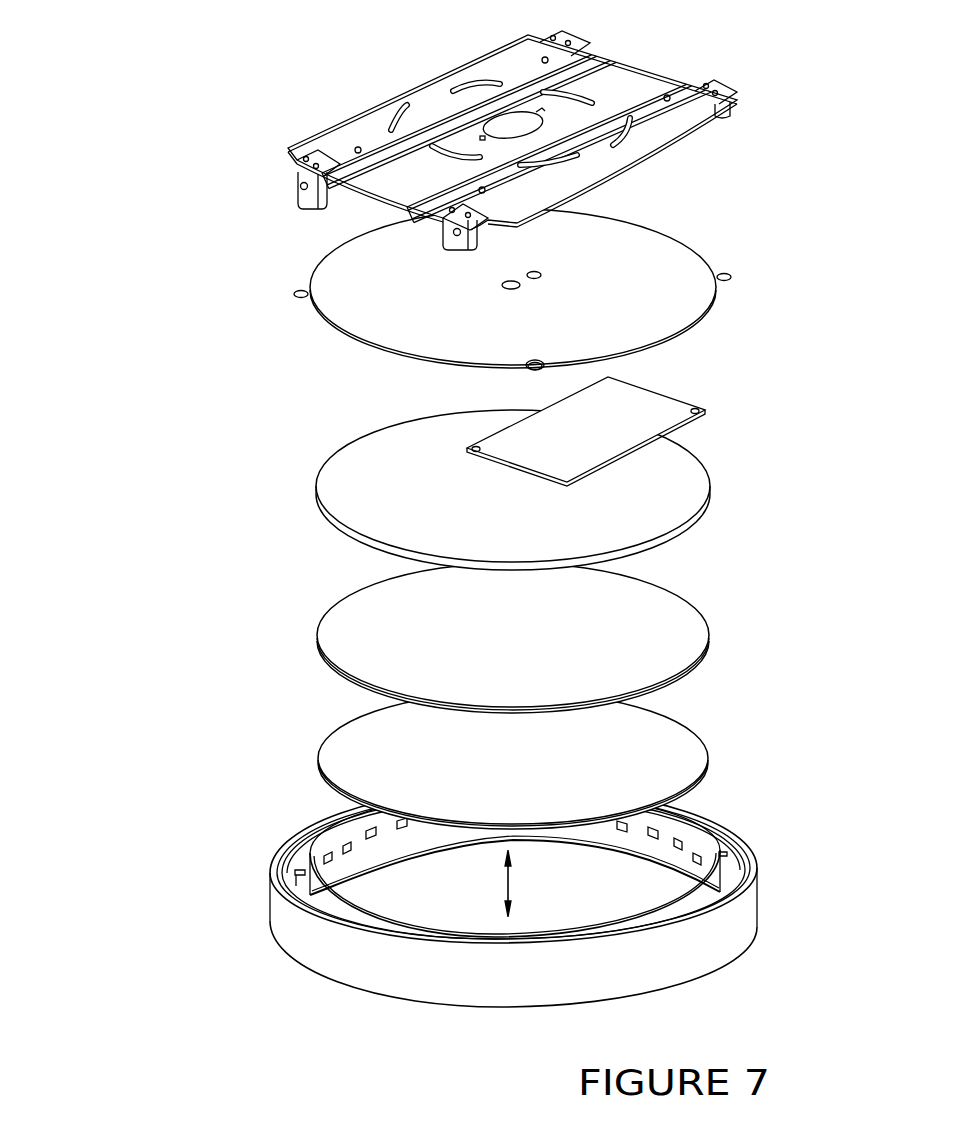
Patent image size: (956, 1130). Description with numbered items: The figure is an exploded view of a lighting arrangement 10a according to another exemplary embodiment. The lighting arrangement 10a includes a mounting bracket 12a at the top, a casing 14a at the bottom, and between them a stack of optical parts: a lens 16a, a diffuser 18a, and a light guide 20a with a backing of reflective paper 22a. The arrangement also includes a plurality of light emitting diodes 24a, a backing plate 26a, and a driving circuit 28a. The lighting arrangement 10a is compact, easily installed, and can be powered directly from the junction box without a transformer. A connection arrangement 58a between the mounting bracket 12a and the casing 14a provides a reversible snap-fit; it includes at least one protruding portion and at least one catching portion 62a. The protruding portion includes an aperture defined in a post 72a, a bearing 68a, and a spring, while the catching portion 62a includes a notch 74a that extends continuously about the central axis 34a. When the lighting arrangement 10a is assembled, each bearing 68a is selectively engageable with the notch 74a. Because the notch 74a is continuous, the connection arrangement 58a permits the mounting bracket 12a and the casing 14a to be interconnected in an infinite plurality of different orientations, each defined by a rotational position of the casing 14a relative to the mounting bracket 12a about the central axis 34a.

The lighting arrangement 10a is at (186, 89).
The mounting bracket 12a is at (210, 193).
The casing 14a is at (225, 930).
The lens 16a is at (288, 715).
The diffuser 18a is at (202, 630).
The light guide 20a is at (220, 483).
The reflective paper 22a is at (658, 477).
The light emitting diodes 24a is at (347, 848).
The backing plate 26a is at (715, 240).
The driving circuit 28a is at (450, 402).
The central axis 34a is at (510, 889).
The connection arrangement 58a is at (248, 475).
The catching portion 62a is at (287, 212).
The bearing 68a is at (298, 185).
The post 72a is at (317, 200).
The notch 74a is at (295, 830).